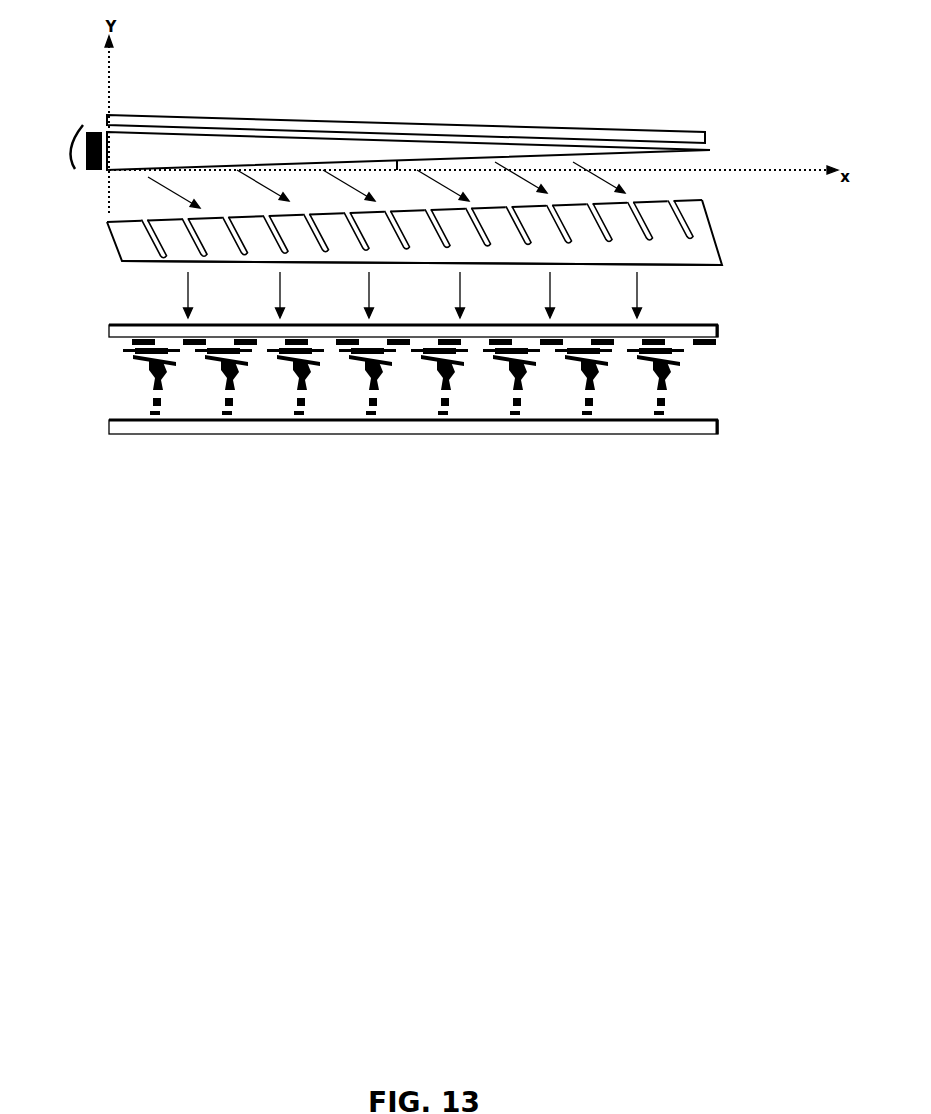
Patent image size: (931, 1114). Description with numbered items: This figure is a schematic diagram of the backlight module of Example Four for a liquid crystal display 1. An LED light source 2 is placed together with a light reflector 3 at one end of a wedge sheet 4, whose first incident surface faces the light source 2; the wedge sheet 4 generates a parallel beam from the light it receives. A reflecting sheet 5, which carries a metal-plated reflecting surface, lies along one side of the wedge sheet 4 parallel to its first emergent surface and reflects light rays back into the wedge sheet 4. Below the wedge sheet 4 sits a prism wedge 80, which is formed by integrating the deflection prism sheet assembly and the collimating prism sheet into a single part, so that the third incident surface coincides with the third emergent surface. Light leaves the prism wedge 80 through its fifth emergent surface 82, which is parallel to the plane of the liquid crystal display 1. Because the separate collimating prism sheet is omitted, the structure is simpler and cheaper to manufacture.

The liquid crystal display 1 is at (683, 373).
The LED light source 2 is at (93, 130).
The light reflector 3 is at (73, 152).
The wedge sheet 4 is at (134, 153).
The reflecting sheet 5 is at (285, 123).
The prism wedge 80 is at (698, 233).
The fifth emergent surface 82 is at (670, 265).